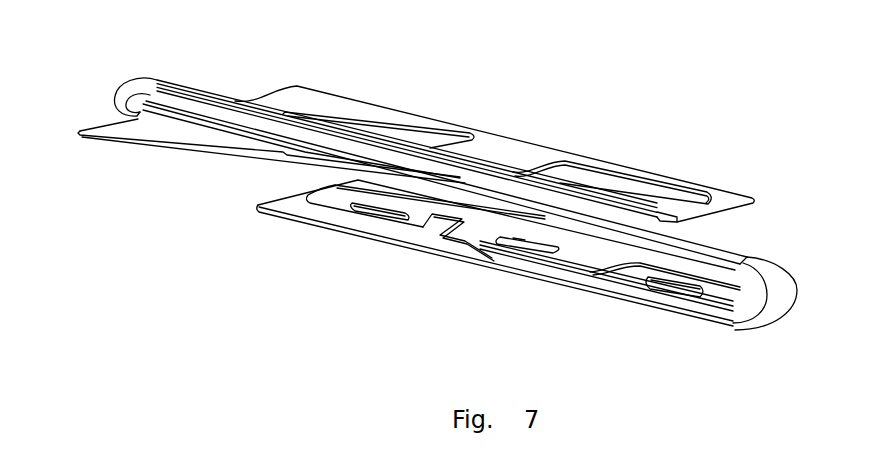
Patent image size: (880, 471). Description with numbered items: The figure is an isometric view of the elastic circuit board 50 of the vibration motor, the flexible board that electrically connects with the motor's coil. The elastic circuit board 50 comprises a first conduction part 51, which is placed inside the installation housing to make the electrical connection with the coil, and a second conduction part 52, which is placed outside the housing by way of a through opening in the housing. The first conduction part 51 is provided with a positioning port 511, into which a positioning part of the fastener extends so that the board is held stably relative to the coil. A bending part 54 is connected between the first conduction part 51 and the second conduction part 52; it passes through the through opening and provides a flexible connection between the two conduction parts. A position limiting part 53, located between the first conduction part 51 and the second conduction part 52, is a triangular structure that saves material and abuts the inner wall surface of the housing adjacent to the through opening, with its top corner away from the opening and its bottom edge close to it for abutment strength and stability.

The elastic circuit board 50 is at (458, 40).
The first conduction part 51 is at (480, 222).
The positioning port 511 is at (685, 280).
The second conduction part 52 is at (478, 150).
The position limiting part 53 is at (137, 127).
The bending part 54 is at (427, 182).